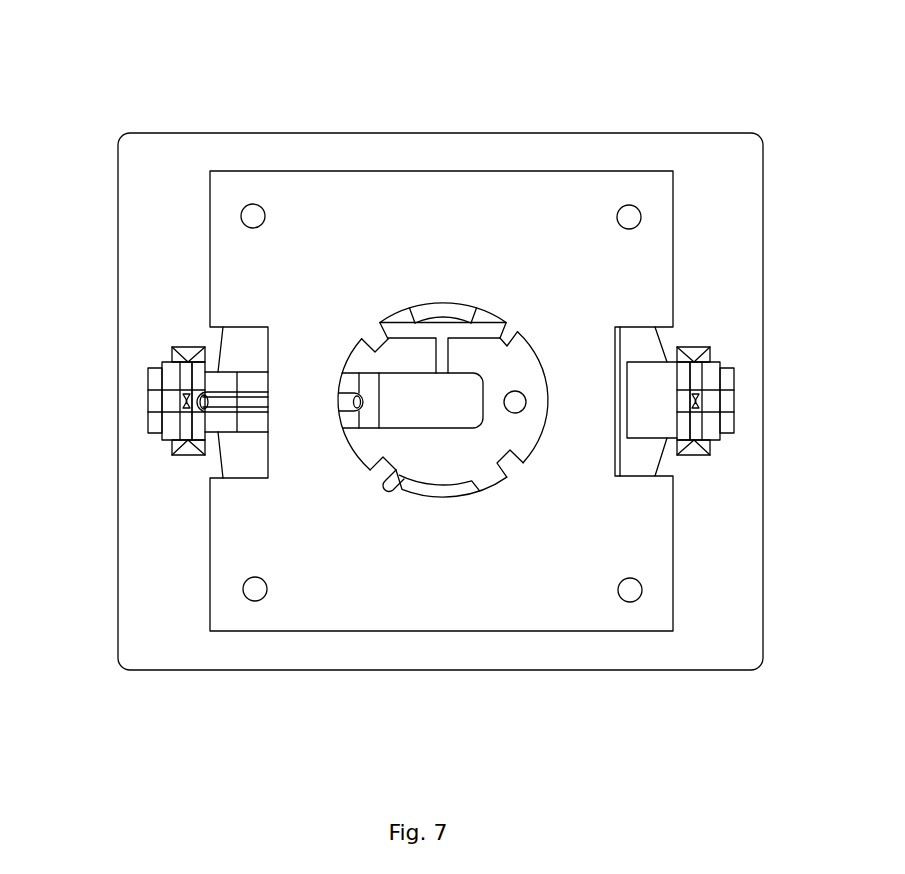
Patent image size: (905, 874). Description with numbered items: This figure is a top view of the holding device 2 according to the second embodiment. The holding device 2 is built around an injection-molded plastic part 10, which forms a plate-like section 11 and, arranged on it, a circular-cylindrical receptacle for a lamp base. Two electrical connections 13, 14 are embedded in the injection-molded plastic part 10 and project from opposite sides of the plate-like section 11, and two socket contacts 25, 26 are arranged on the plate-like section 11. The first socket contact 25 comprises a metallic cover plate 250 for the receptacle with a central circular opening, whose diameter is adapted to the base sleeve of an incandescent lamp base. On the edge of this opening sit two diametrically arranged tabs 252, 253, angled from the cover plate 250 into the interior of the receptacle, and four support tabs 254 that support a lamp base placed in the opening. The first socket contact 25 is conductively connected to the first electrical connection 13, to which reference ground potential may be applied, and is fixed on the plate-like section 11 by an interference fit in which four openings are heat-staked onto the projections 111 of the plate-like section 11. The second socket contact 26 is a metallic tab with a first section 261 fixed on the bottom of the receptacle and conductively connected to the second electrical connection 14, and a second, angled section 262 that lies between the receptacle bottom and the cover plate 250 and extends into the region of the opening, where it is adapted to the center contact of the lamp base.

The holding device 2 is at (449, 348).
The injection-molded plastic part 10 is at (449, 401).
The plate-like section 11 is at (146, 274).
The first electrical connection 13 is at (712, 428).
The second electrical connection 14 is at (170, 422).
The first socket contact 25 is at (441, 342).
The cover plate 250 is at (330, 198).
The projections 111 is at (253, 214).
The tab 252 is at (461, 305).
The tab 253 is at (449, 498).
The support tabs 254 is at (375, 333).
The second socket contact 26 is at (331, 543).
The first section 261 is at (248, 422).
The second section 262 is at (425, 413).